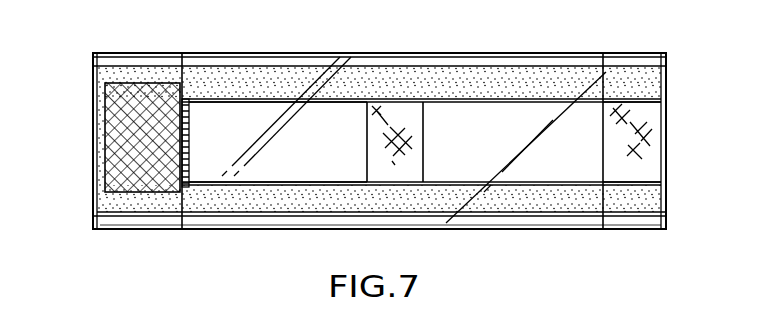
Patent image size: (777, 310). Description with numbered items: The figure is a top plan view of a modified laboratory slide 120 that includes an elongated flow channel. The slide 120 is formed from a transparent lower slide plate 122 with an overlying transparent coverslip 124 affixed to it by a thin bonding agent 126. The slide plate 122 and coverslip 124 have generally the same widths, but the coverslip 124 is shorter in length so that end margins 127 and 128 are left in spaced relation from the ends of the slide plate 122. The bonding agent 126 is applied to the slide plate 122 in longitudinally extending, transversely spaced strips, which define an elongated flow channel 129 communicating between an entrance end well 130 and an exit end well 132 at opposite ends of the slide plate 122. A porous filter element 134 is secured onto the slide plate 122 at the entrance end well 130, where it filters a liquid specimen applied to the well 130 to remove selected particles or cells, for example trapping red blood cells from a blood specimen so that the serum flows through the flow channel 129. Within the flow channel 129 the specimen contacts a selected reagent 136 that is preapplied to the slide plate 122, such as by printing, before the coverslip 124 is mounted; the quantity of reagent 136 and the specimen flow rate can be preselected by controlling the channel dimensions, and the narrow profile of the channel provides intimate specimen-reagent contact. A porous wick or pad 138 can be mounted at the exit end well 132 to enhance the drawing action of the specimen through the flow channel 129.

The laboratory slide 120 is at (588, 236).
The slide plate 122 is at (157, 222).
The coverslip 124 is at (422, 62).
The bonding agent 126 is at (538, 84).
The end margin 127 is at (183, 80).
The end margin 128 is at (604, 81).
The flow channel 129 is at (307, 128).
The entrance end well 130 is at (189, 155).
The exit end well 132 is at (648, 176).
The porous filter element 134 is at (122, 103).
The reagent 136 is at (413, 153).
The porous wick or pad 138 is at (647, 134).